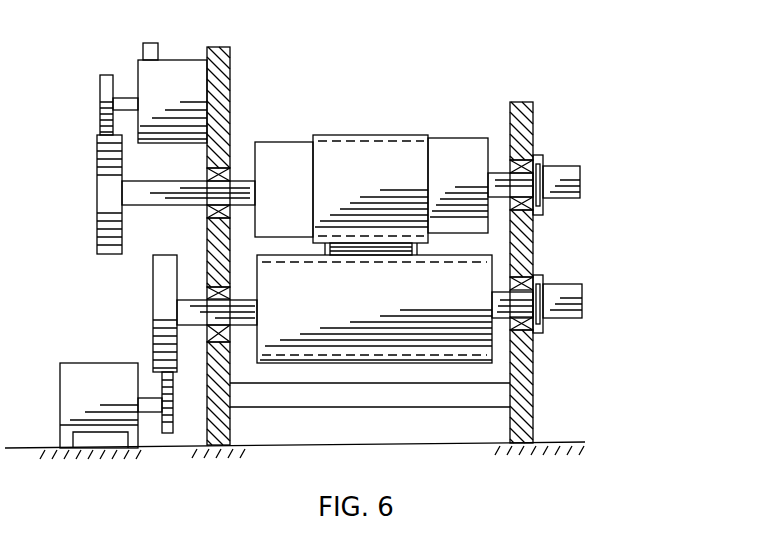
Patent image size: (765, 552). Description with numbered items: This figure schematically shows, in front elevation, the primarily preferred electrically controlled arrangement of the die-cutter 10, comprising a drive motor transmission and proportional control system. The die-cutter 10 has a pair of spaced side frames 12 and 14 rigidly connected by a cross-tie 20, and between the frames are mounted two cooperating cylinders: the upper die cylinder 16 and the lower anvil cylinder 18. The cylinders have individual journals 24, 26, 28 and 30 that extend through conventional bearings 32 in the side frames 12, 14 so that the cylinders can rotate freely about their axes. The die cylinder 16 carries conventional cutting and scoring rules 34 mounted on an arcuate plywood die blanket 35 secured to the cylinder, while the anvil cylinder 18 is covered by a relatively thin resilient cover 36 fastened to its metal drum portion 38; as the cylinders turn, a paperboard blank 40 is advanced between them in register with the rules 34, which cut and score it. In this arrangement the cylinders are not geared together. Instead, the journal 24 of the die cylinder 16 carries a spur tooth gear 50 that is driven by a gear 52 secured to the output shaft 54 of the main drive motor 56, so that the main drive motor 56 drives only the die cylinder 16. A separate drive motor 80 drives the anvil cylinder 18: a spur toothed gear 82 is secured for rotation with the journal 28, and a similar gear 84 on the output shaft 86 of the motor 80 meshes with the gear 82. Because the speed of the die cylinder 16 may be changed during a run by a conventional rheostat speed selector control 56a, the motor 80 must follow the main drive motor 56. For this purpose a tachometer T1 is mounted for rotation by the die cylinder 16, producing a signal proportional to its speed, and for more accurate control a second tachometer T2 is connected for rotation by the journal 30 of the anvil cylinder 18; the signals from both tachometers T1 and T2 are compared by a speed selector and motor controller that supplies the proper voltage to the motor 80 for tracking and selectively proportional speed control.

The die-cutter 10 is at (398, 66).
The side frame 12 is at (232, 118).
The side frame 14 is at (522, 102).
The die cylinder 16 is at (440, 138).
The anvil cylinder 18 is at (420, 363).
The cross-tie 20 is at (325, 408).
The journal 24 is at (165, 182).
The journal 26 is at (535, 227).
The journal 28 is at (191, 299).
The journal 30 is at (513, 328).
The bearings 32 is at (232, 170).
The cutting and scoring rules 34 is at (422, 255).
The die blanket 35 is at (388, 135).
The resilient cover 36 is at (310, 265).
The metal drum portion 38 is at (466, 262).
The paperboard blank 40 is at (318, 255).
The spur tooth gear 50 is at (97, 170).
The gear 52 is at (100, 92).
The output shaft 54 is at (123, 98).
The main drive motor 56 is at (177, 59).
The rheostat speed selector control 56a is at (150, 43).
The drive motor 80 is at (78, 363).
The spur toothed gear 82 is at (152, 300).
The gear 84 is at (173, 410).
The output shaft 86 is at (148, 398).
The tachometer T1 is at (580, 190).
The tachometer T2 is at (583, 300).